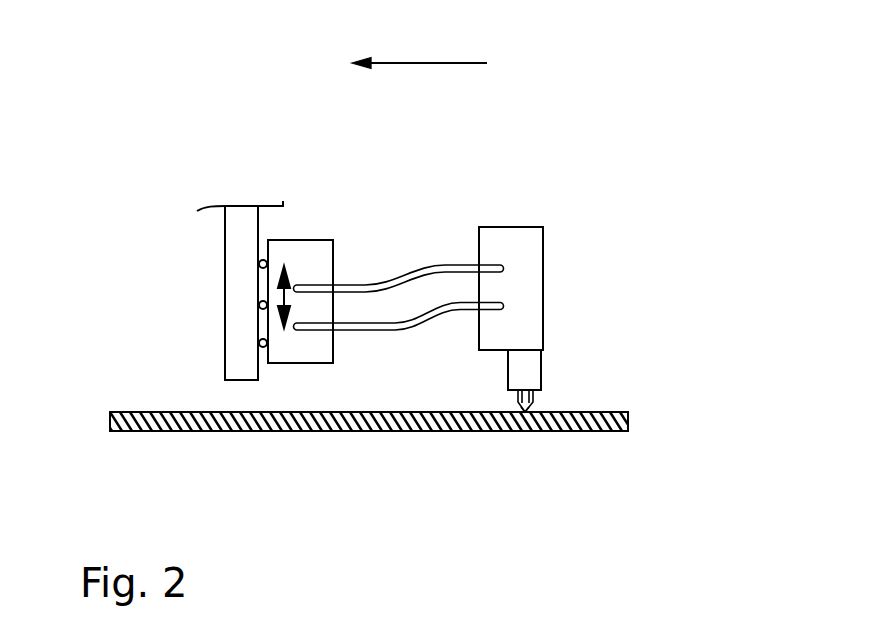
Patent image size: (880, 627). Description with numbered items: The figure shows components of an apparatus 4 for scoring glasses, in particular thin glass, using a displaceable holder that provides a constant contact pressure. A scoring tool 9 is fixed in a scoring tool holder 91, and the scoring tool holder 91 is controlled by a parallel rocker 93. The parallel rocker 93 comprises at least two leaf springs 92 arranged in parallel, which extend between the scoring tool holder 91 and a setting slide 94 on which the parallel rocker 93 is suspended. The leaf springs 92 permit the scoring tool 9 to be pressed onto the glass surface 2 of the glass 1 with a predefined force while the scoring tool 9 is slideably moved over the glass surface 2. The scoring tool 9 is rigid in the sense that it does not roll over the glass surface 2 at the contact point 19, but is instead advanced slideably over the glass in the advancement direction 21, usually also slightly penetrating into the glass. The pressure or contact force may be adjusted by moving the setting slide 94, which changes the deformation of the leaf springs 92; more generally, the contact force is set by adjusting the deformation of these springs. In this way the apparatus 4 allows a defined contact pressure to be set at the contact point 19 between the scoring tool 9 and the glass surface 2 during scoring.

The substrate 1 is at (110, 430).
The glass surface 2 is at (202, 413).
The apparatus 4 is at (642, 155).
The scoring tool 9 is at (535, 400).
The contact point 19 is at (524, 411).
The advancement direction 21 is at (444, 66).
The scoring tool holder 91 is at (543, 305).
The leaf springs 92 is at (398, 305).
The parallel rocker 93 is at (399, 215).
The setting slide 94 is at (291, 240).